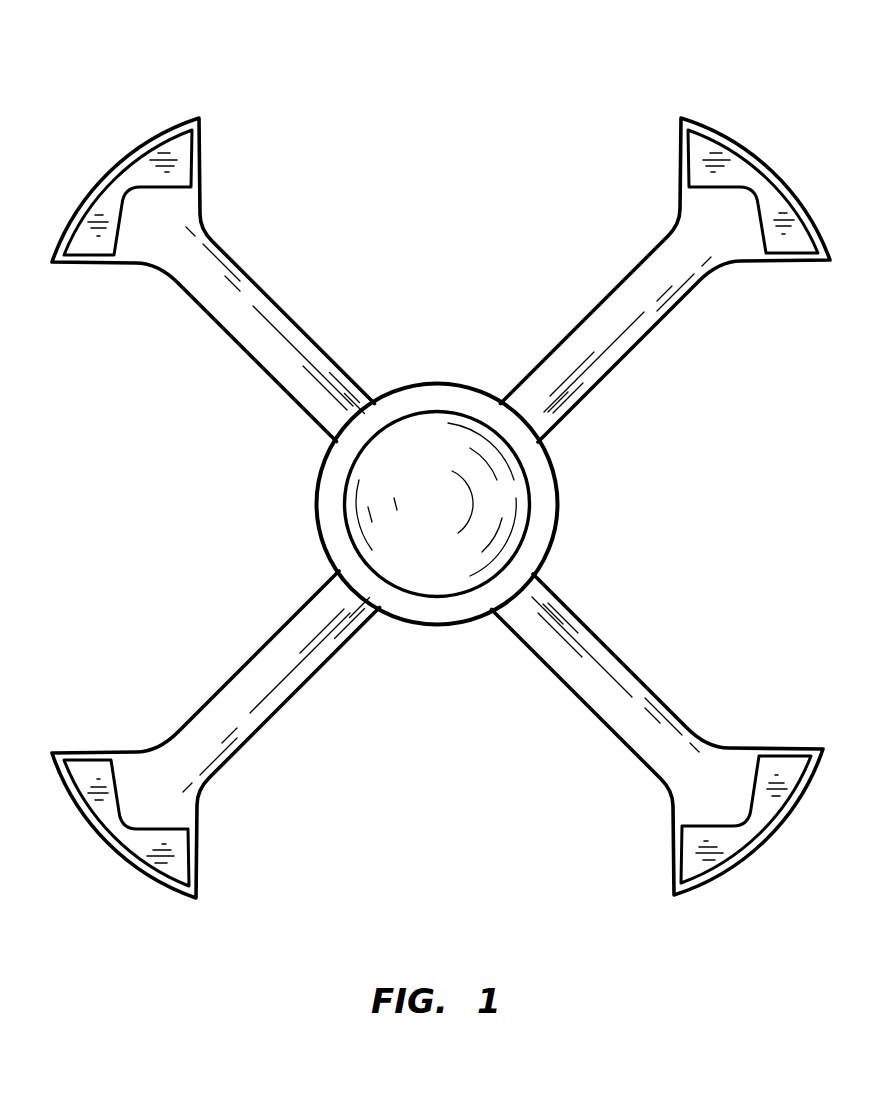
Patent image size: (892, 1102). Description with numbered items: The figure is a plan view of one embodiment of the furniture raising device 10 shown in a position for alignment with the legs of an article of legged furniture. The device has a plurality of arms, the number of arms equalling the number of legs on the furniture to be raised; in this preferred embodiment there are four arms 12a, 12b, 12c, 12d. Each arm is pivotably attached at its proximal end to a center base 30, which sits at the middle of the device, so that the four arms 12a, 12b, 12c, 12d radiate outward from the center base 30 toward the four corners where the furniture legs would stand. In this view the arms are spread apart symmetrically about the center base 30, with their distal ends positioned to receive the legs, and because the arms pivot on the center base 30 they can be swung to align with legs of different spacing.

The tool holder / cross-shaped device 10 is at (435, 112).
The arm 12a is at (660, 320).
The arm 12b is at (637, 678).
The arm 12c is at (267, 720).
The arm 12d is at (231, 335).
The center base 30 is at (462, 624).